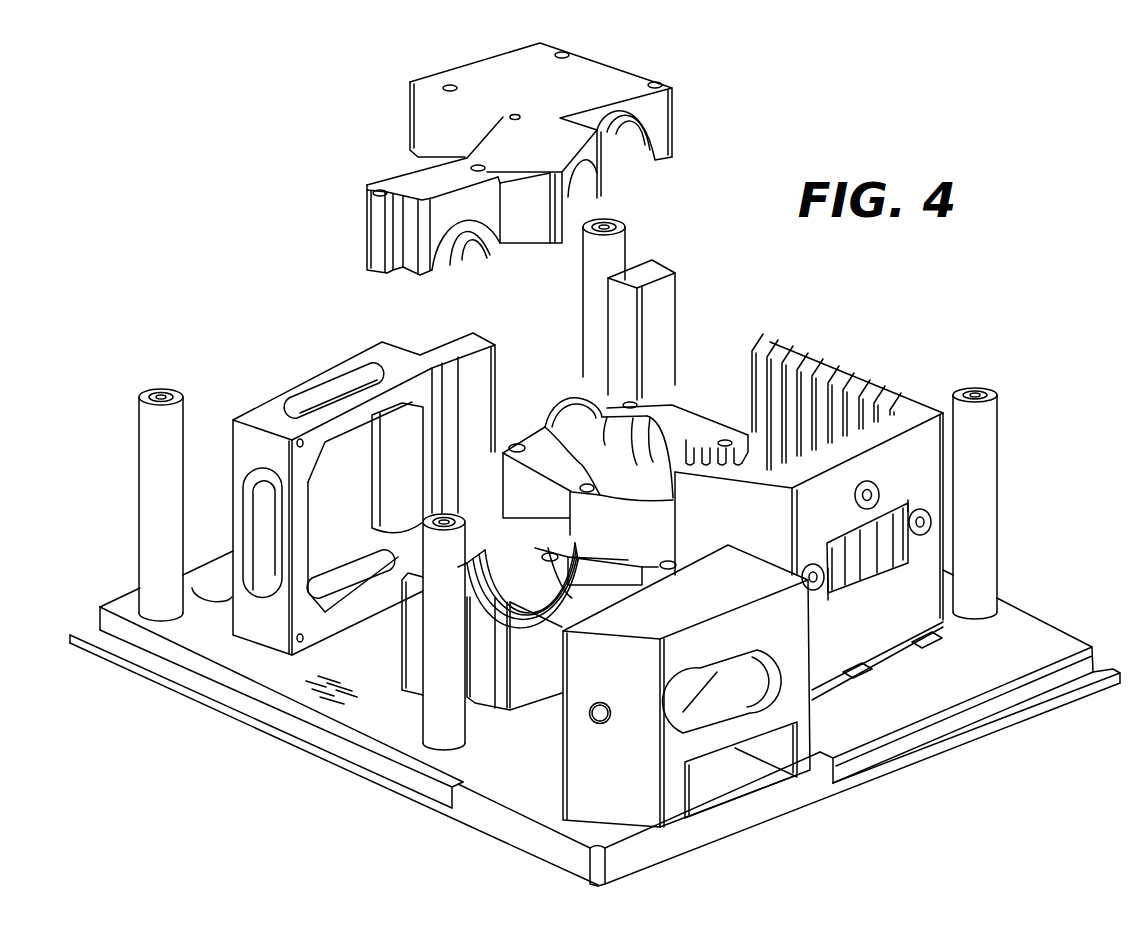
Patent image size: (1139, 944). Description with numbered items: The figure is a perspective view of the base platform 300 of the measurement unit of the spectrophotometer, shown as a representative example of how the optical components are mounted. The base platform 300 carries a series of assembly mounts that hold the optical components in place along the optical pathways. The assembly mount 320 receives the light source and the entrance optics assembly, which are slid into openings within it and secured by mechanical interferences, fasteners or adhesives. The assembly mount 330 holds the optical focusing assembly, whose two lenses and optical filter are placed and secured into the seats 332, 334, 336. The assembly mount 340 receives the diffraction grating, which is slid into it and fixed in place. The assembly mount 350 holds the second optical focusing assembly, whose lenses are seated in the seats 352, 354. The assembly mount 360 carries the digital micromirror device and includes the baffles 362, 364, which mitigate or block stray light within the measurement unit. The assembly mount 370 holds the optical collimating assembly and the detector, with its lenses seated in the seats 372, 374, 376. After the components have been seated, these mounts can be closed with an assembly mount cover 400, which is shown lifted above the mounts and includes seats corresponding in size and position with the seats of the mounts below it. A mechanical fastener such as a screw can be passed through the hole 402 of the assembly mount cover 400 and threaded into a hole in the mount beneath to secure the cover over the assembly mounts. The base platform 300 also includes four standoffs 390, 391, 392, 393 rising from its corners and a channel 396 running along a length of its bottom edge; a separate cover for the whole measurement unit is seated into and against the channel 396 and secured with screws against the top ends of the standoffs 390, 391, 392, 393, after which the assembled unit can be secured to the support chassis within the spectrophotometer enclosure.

The base platform 300 is at (330, 695).
The assembly mount 320 is at (575, 747).
The assembly mount 330 is at (490, 626).
The seat 332 is at (560, 556).
The seat 334 is at (528, 548).
The seat 336 is at (495, 540).
The assembly mount 340 is at (260, 412).
The assembly mount 350 is at (605, 566).
The seat 352 is at (607, 502).
The seat 354 is at (645, 505).
The assembly mount 360 is at (809, 511).
The baffle 362 is at (758, 463).
The baffle 364 is at (845, 367).
The assembly mount 370 is at (625, 397).
The seat 372 is at (697, 433).
The seat 374 is at (645, 407).
The seat 376 is at (598, 420).
The standoff 390 is at (147, 433).
The standoff 391 is at (622, 243).
The standoff 392 is at (430, 690).
The standoff 393 is at (998, 410).
The channel 396 is at (87, 628).
The assembly mount cover 400 is at (618, 83).
The hole 402 is at (515, 115).